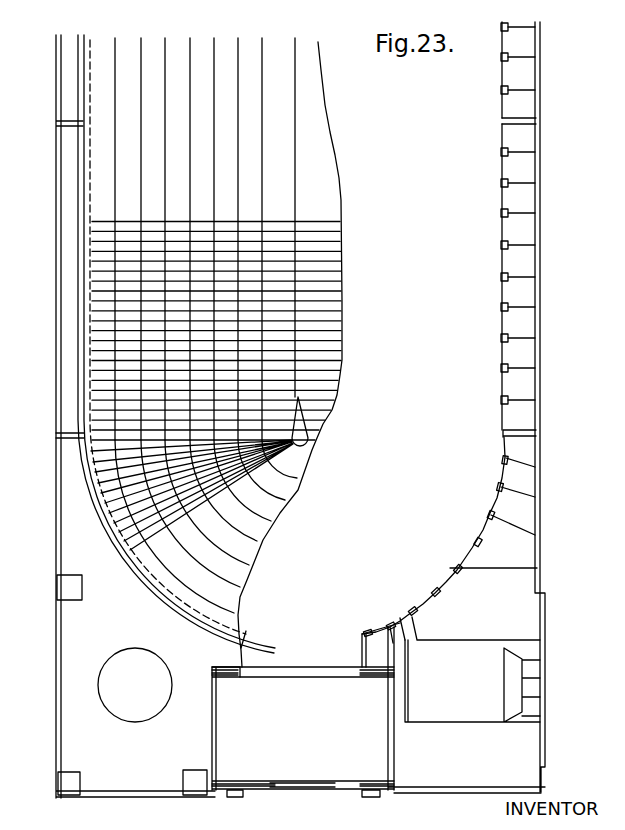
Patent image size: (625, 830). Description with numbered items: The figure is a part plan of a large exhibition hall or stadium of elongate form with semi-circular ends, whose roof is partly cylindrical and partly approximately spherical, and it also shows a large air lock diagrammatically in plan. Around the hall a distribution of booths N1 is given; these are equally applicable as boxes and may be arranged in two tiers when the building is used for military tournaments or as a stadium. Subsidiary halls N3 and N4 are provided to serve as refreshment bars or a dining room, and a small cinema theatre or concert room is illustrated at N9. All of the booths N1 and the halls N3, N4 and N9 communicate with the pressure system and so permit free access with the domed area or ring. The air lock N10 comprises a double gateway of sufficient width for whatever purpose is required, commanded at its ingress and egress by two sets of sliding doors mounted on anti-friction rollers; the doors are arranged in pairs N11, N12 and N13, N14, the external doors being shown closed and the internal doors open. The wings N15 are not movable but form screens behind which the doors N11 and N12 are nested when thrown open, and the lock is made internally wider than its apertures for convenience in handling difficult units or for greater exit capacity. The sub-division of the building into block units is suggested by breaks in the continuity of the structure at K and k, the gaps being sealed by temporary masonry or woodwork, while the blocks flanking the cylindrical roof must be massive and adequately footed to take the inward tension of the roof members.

The booths N1 is at (513, 70).
The gap in building block continuity k is at (537, 122).
The gap in building block continuity K is at (58, 434).
The subsidiary hall N3 is at (465, 605).
The cinema theatre or concert room N9 is at (472, 681).
The subsidiary hall N4 is at (466, 710).
The air lock N10 is at (295, 726).
The sliding door N11 is at (373, 663).
The sliding door N12 is at (252, 782).
The sliding door N13 is at (226, 678).
The sliding door N14 is at (228, 672).
The wing N15 is at (230, 797).